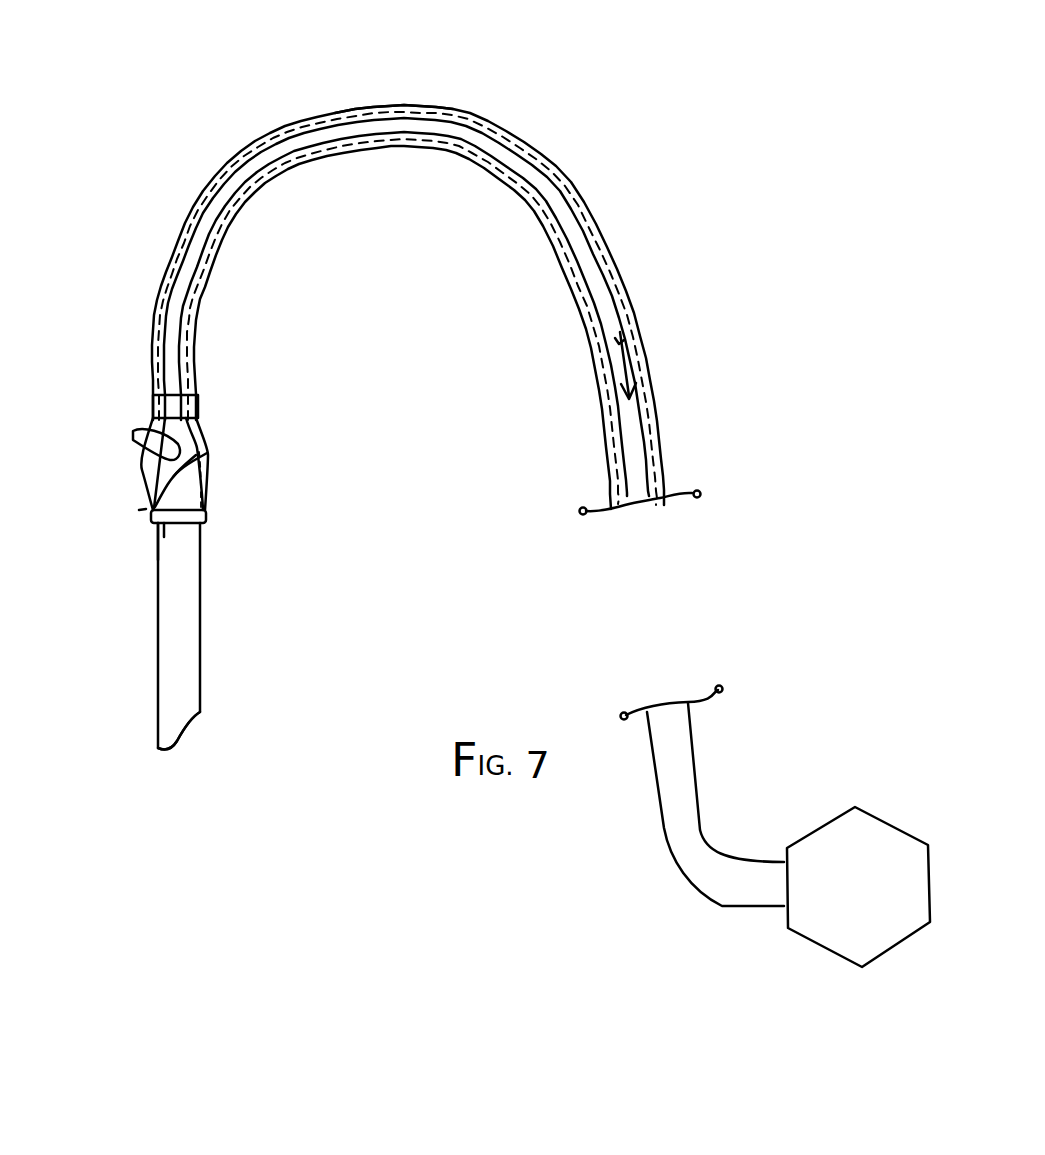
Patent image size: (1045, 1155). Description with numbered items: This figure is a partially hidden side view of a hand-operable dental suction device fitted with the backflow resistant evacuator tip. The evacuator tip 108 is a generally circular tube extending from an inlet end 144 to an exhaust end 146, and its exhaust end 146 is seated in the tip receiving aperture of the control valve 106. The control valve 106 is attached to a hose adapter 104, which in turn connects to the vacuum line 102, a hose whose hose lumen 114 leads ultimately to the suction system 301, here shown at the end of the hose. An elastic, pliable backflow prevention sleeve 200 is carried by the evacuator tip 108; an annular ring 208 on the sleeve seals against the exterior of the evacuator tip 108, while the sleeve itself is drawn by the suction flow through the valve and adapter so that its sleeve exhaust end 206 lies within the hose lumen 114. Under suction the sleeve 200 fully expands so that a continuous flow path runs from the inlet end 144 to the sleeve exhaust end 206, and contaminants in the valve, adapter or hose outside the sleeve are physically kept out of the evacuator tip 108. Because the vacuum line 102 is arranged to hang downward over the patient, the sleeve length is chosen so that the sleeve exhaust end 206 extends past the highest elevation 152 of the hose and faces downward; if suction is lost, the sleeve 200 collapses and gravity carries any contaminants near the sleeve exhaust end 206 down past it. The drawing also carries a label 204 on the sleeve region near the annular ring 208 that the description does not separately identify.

The vacuum line 102 is at (203, 293).
The hose lumen 114 is at (533, 163).
The highest elevation 152 is at (385, 107).
The hose adapter 104 is at (205, 400).
The control valve 106 is at (140, 468).
The backflow prevention sleeve 200 is at (197, 428).
The exhaust end 146 is at (200, 453).
The annular ring 208 is at (207, 516).
The connector neck 204 is at (158, 530).
The evacuator tip 108 is at (160, 637).
The inlet end 144 is at (177, 742).
The sleeve exhaust end 206 is at (633, 510).
The suction system 301 is at (858, 887).